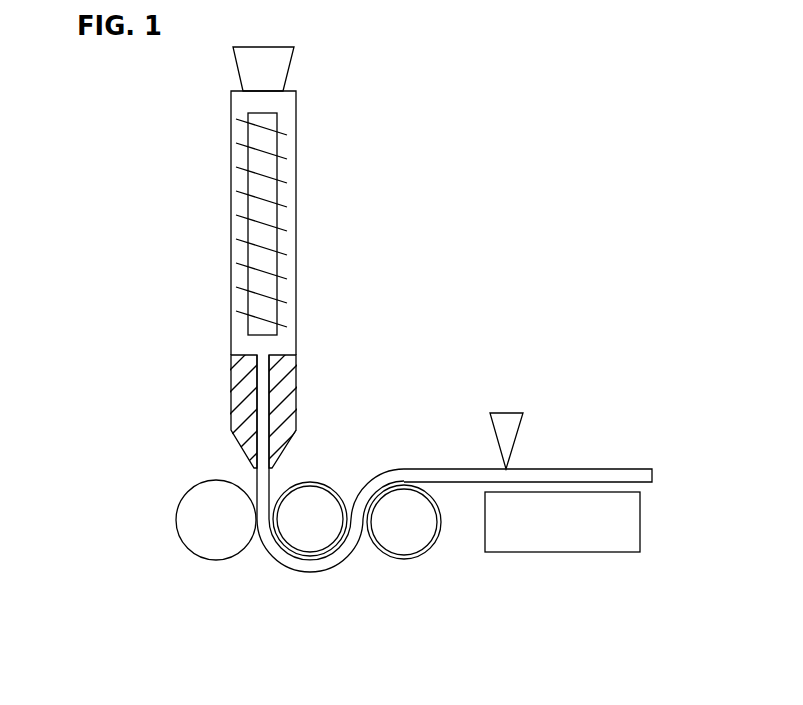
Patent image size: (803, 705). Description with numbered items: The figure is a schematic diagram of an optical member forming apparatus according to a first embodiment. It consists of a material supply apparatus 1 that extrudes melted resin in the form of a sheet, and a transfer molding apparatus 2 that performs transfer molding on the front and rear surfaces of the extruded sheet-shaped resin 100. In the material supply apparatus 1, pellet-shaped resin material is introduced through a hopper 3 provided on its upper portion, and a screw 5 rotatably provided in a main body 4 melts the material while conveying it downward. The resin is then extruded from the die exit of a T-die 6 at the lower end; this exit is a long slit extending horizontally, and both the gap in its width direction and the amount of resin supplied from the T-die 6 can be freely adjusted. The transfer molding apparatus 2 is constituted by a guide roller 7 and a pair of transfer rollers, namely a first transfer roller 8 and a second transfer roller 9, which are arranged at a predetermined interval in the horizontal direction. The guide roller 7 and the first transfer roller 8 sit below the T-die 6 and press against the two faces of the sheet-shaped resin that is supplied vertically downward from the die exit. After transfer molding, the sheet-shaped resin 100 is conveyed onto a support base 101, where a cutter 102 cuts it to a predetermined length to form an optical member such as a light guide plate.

The material supply apparatus 1 is at (198, 253).
The transfer molding apparatus 2 is at (345, 592).
The hopper 3 is at (241, 60).
The main body 4 is at (230, 132).
The screw 5 is at (284, 131).
The T-die 6 is at (231, 398).
The guide roller 7 is at (190, 528).
The first transfer roller 8 is at (318, 487).
The second transfer roller 9 is at (412, 540).
The sheet-shaped resin 100 is at (621, 469).
The support base 101 is at (560, 545).
The cutter 102 is at (503, 422).